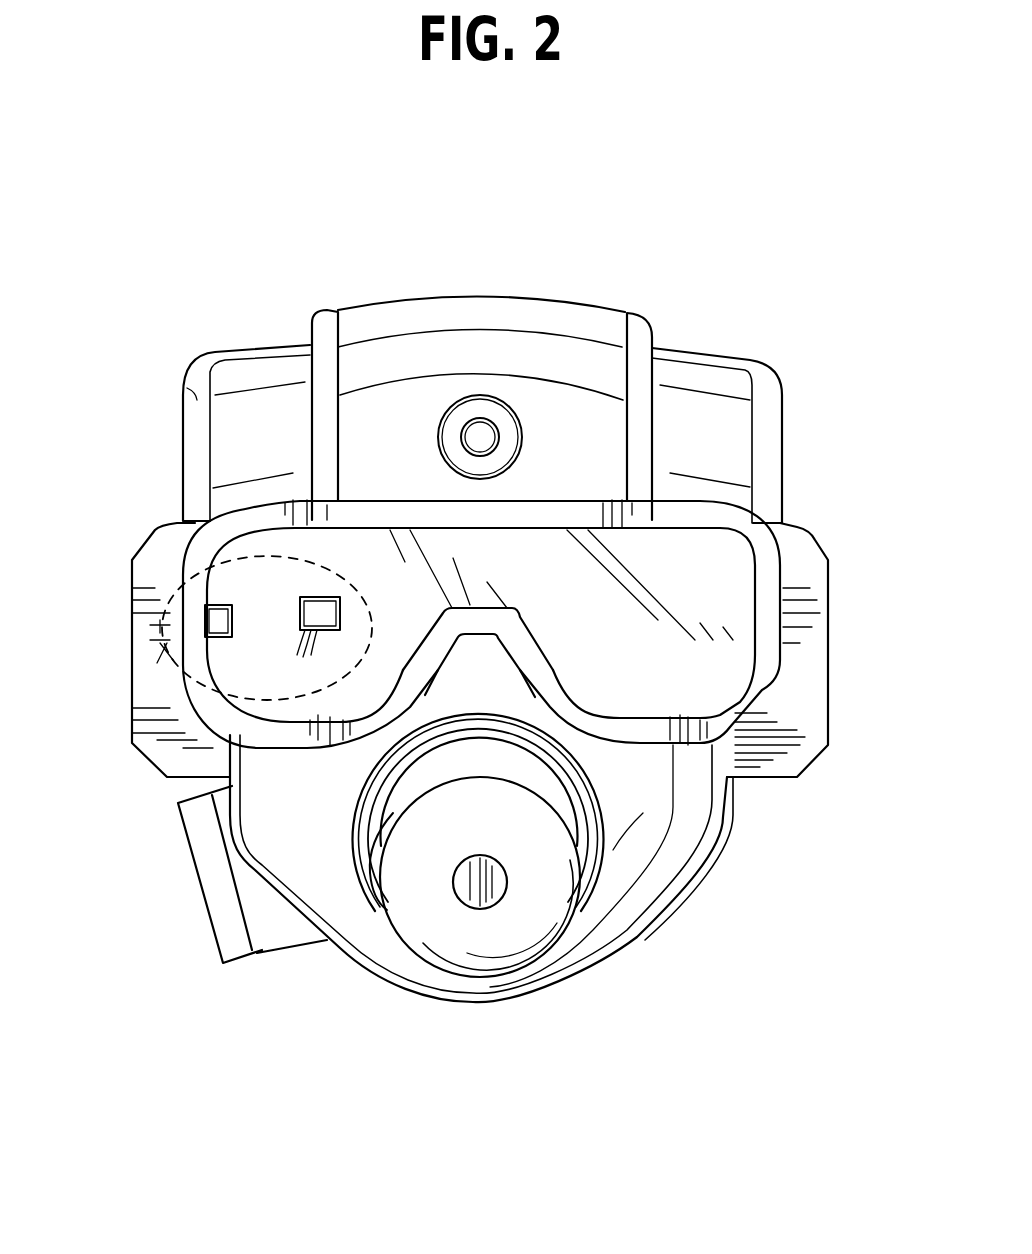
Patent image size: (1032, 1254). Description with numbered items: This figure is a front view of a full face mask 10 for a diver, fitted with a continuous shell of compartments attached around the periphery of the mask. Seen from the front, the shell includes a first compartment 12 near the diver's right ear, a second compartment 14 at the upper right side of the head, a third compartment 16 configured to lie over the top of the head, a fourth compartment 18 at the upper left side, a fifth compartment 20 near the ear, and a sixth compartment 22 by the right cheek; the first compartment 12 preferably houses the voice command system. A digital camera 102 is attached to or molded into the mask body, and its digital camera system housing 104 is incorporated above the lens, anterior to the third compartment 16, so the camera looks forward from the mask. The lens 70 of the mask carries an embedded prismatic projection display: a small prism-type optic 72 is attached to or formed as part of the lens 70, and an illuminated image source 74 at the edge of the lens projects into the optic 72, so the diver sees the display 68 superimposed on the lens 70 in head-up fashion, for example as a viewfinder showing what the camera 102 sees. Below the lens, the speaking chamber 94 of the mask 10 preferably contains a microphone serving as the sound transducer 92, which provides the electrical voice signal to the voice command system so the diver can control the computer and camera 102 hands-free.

The full face mask 10 is at (460, 205).
The first compartment 12 is at (147, 628).
The second compartment 14 is at (190, 395).
The third compartment 16 is at (410, 297).
The fourth compartment 18 is at (733, 388).
The fifth compartment 20 is at (803, 638).
The sixth compartment 22 is at (220, 866).
The display 68 is at (130, 562).
The lens 70 is at (735, 590).
The prism-type optic 72 is at (300, 628).
The illuminated image source 74 is at (207, 620).
The sound transducer 92 is at (397, 810).
The speaking chamber 94 is at (517, 840).
The digital camera 102 is at (482, 433).
The digital camera system housing 104 is at (507, 296).